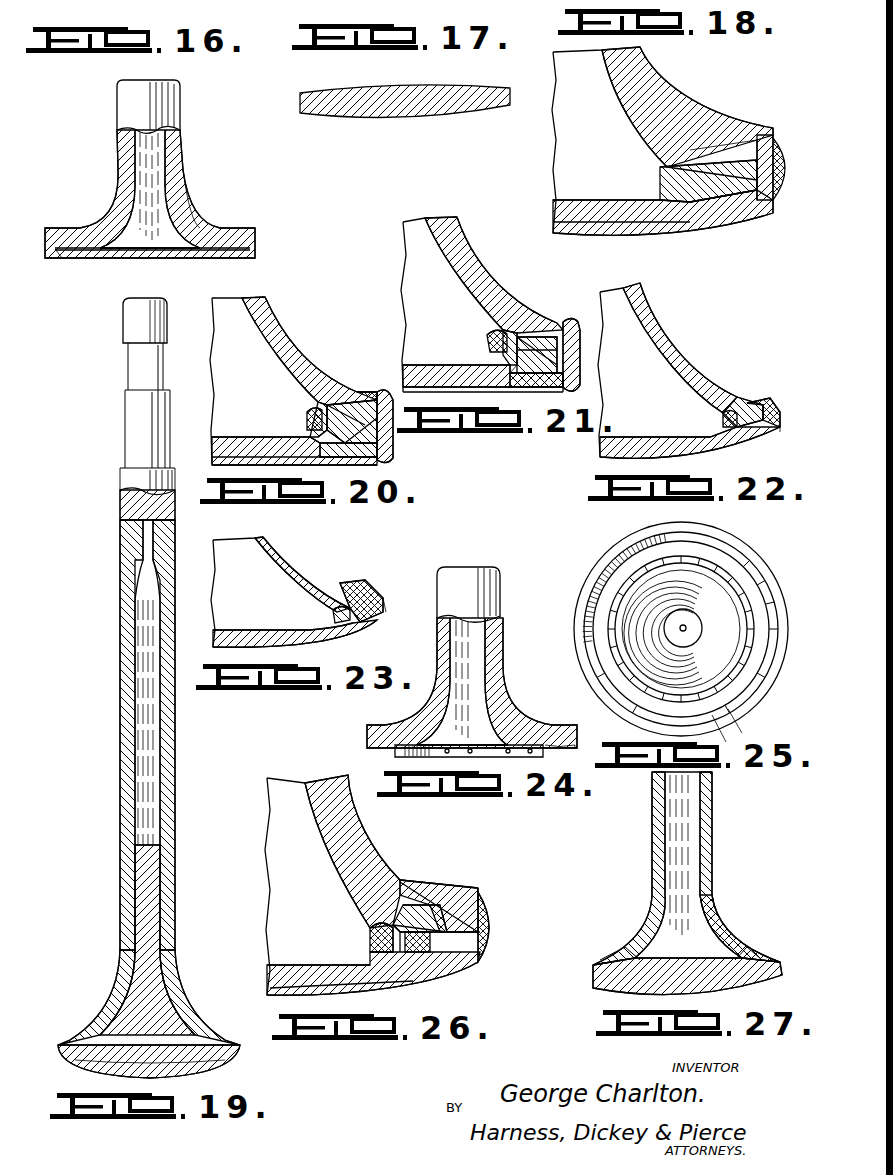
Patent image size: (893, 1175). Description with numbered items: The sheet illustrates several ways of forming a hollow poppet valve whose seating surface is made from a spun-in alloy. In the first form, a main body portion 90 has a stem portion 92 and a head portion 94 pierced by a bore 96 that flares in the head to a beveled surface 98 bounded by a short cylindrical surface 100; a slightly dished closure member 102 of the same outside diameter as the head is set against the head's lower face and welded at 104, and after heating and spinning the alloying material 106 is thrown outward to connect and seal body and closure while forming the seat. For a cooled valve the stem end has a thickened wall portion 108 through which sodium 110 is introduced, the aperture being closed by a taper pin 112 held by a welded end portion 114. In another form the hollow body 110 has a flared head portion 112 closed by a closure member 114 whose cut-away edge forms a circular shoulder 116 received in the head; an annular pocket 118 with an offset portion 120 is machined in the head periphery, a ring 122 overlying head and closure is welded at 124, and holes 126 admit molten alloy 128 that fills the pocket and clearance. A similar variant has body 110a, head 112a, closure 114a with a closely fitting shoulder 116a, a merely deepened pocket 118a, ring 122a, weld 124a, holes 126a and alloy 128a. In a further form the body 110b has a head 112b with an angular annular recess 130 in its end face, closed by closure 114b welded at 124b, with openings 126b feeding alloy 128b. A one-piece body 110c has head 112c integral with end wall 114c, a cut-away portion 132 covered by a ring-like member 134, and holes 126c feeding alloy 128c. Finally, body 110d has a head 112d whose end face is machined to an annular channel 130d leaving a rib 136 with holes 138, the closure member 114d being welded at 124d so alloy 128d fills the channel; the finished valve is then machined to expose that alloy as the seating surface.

In FIG. 16, the main body portion 90 is at (192, 140).
In FIG. 18, the main body portion 90 is at (662, 84).
In FIG. 19, the main body portion 90 is at (123, 809).
In FIG. 16, the stem portion 92 is at (180, 103).
In FIG. 19, the stem portion 92 is at (120, 712).
In FIG. 16, the head portion 94 is at (208, 236).
In FIG. 18, the head portion 94 is at (732, 152).
In FIG. 19, the head portion 94 is at (208, 1042).
In FIG. 16, the bore 96 is at (138, 150).
In FIG. 16, the beveled surface 98 is at (68, 252).
In FIG. 18, the beveled surface 98 is at (762, 152).
In FIG. 16, the cylindrical surface 100 is at (56, 258).
In FIG. 17, the closure member 102 is at (385, 122).
In FIG. 18, the closure member 102 is at (650, 236).
In FIG. 19, the closure member 102 is at (215, 1078).
In FIG. 18, the weld 104 is at (782, 205).
In FIG. 18, the alloying material 106 is at (680, 178).
In FIG. 19, the alloying material 106 is at (248, 1052).
In FIG. 19, the thickened wall portion 108 is at (132, 566).
In FIG. 20, the sodium 110 is at (273, 316).
In FIG. 19, the sodium 110 is at (140, 866).
In FIG. 20, the taper pin 112 is at (292, 356).
In FIG. 19, the taper pin 112 is at (140, 542).
In FIG. 20, the end portion 114 is at (228, 460).
In FIG. 19, the end portion 114 is at (120, 514).
In FIG. 20, the circular shoulder 116 is at (322, 452).
In FIG. 20, the annular pocket 118 is at (387, 442).
In FIG. 20, the offset portion 120 is at (355, 392).
In FIG. 20, the ring 122 is at (392, 458).
In FIG. 20, the weld 124 is at (374, 390).
In FIG. 20, the holes 126 is at (306, 412).
In FIG. 20, the alloy 128 is at (310, 428).
In FIG. 21, the hollow main body portion 110a is at (476, 240).
In FIG. 21, the head portion 112a is at (498, 292).
In FIG. 21, the closure member 114a is at (414, 389).
In FIG. 21, the shoulder 116a is at (508, 380).
In FIG. 21, the pocket 118a is at (518, 357).
In FIG. 21, the ring 122a is at (562, 393).
In FIG. 21, the weld 124a is at (568, 320).
In FIG. 21, the holes 126a is at (500, 336).
In FIG. 21, the alloy 128a is at (496, 348).
In FIG. 22, the hollow main body portion 110b is at (650, 302).
In FIG. 22, the head portion 112b is at (662, 354).
In FIG. 22, the closure 114b is at (700, 445).
In FIG. 22, the weld 124b is at (778, 430).
In FIG. 22, the openings 126b is at (742, 402).
In FIG. 22, the alloy 128b is at (722, 420).
In FIG. 22, the annular recess 130 is at (770, 403).
In FIG. 23, the hollow main body portion 110c is at (284, 543).
In FIG. 23, the head portion 112c is at (292, 570).
In FIG. 23, the end wall 114c is at (288, 643).
In FIG. 23, the holes 126c is at (372, 634).
In FIG. 23, the alloy material 128c is at (330, 616).
In FIG. 23, the cut-away portion 132 is at (382, 612).
In FIG. 23, the ring-like member 134 is at (360, 588).
In FIG. 24, the hollow main body portion 110d is at (510, 602).
In FIG. 27, the hollow main body portion 110d is at (720, 822).
In FIG. 24, the head portion 112d is at (507, 676).
In FIG. 25, the head portion 112d is at (714, 587).
In FIG. 26, the head portion 112d is at (355, 858).
In FIG. 27, the head portion 112d is at (735, 944).
In FIG. 26, the closure member 114d is at (333, 990).
In FIG. 27, the closure member 114d is at (752, 986).
In FIG. 26, the weld 124d is at (497, 925).
In FIG. 26, the alloy 128d is at (372, 940).
In FIG. 27, the alloy 128d is at (755, 950).
In FIG. 24, the annular channel 130d is at (560, 742).
In FIG. 25, the annular channel 130d is at (730, 727).
In FIG. 26, the annular channel 130d is at (440, 890).
In FIG. 26, the annular flange or rib 136 is at (385, 773).
In FIG. 24, the holes 138 is at (488, 750).
In FIG. 25, the holes 138 is at (724, 702).
In FIG. 26, the holes 138 is at (415, 905).